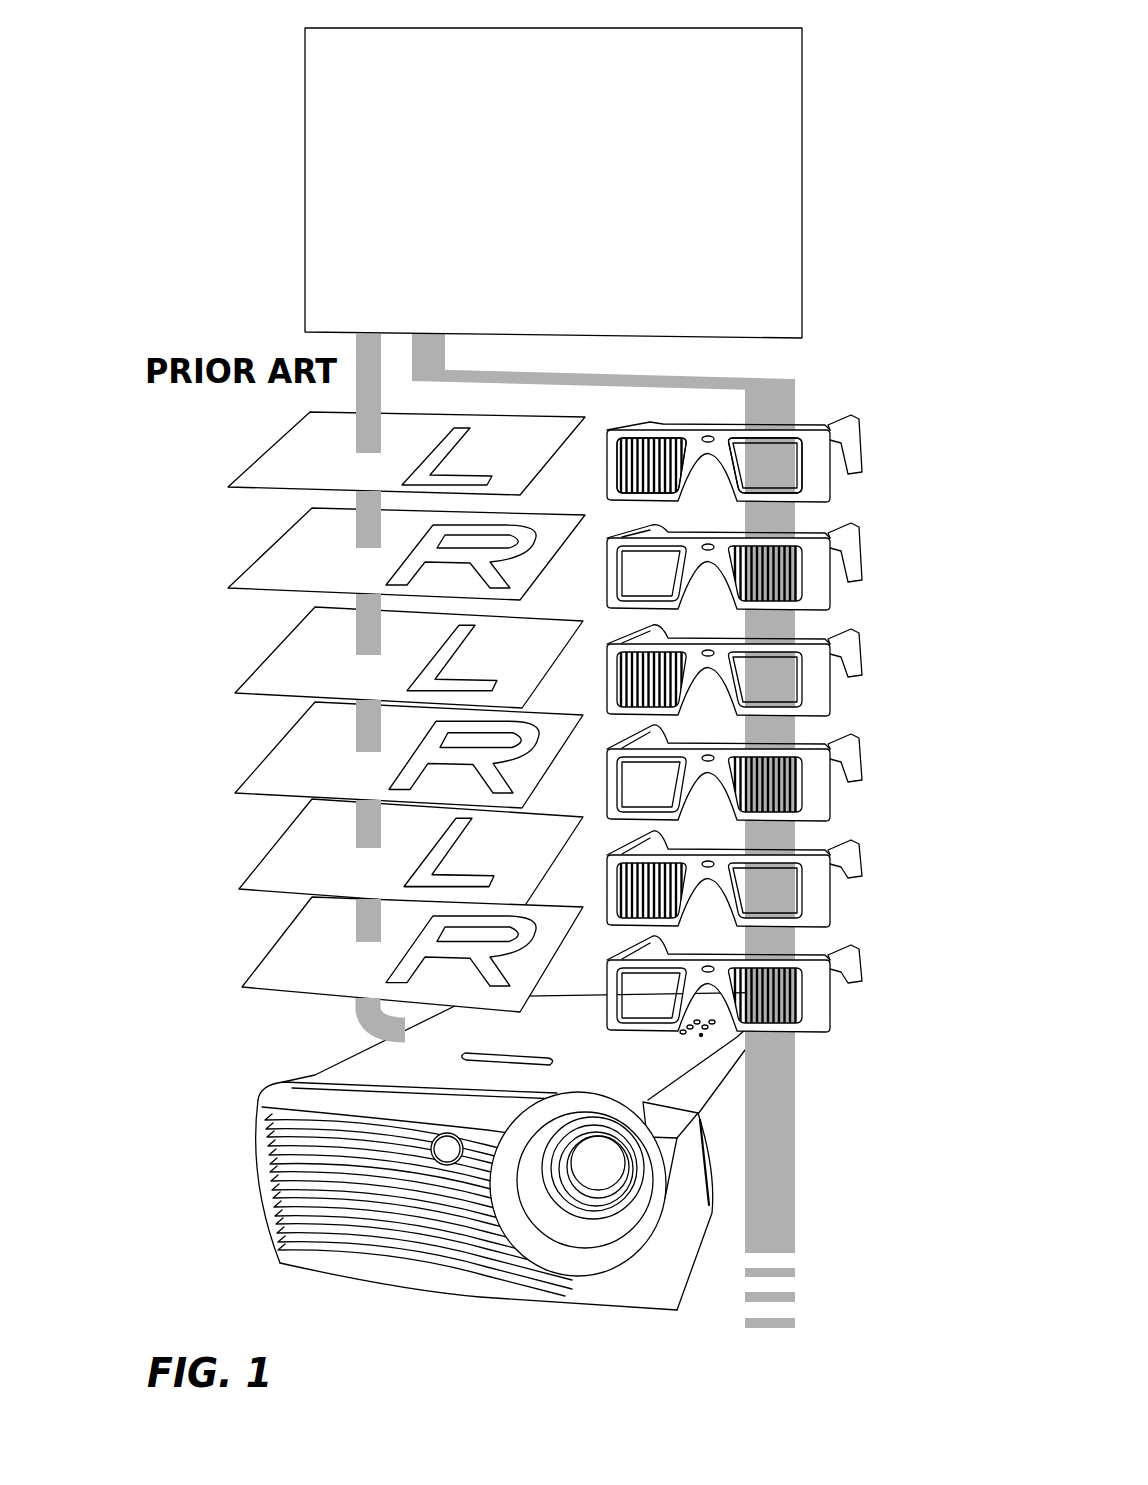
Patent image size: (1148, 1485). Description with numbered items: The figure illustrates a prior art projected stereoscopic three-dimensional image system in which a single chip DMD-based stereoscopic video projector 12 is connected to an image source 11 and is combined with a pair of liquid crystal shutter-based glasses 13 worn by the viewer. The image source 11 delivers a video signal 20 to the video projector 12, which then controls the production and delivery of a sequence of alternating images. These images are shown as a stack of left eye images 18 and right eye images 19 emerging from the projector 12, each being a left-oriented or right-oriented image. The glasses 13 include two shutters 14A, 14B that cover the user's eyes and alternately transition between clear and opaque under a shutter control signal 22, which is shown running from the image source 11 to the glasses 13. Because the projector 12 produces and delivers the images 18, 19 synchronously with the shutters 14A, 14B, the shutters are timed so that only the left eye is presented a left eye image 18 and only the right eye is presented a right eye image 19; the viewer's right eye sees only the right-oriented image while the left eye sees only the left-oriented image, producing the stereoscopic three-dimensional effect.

The image source 11 is at (291, 54).
The 3D stereoscopic video projector 12 is at (267, 1094).
The liquid crystal shutter-based glasses 13 is at (745, 423).
The shutter 14A is at (660, 473).
The shutter 14B is at (758, 468).
The left eye image 18 is at (255, 463).
The right eye image 19 is at (255, 562).
The video signal 20 is at (368, 399).
The shutter control signal 22 is at (432, 354).